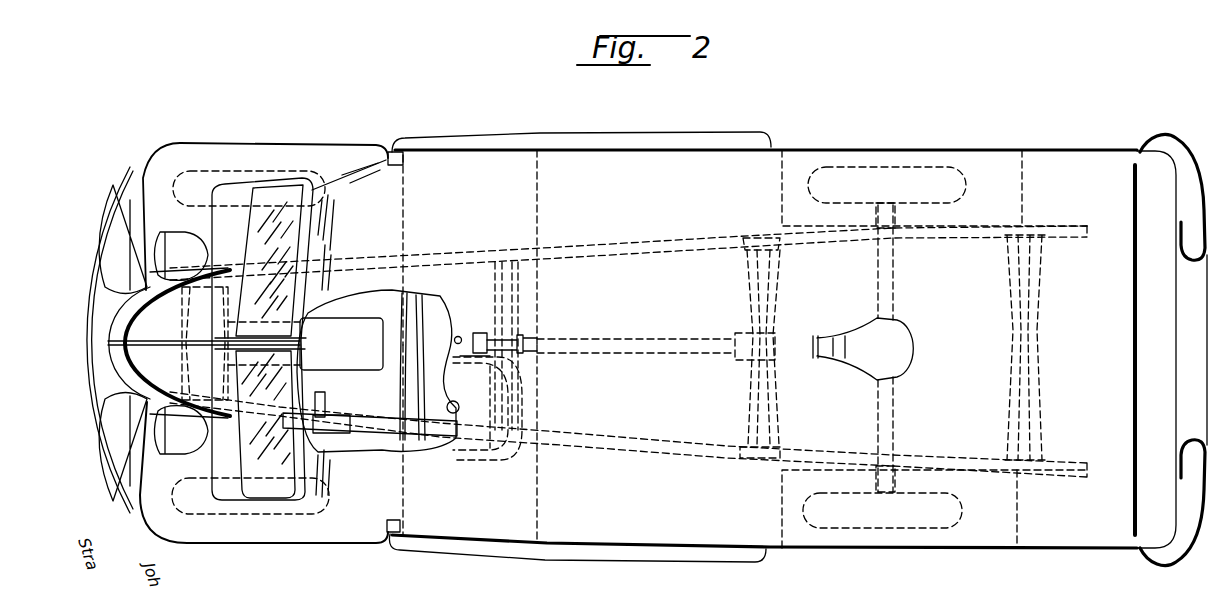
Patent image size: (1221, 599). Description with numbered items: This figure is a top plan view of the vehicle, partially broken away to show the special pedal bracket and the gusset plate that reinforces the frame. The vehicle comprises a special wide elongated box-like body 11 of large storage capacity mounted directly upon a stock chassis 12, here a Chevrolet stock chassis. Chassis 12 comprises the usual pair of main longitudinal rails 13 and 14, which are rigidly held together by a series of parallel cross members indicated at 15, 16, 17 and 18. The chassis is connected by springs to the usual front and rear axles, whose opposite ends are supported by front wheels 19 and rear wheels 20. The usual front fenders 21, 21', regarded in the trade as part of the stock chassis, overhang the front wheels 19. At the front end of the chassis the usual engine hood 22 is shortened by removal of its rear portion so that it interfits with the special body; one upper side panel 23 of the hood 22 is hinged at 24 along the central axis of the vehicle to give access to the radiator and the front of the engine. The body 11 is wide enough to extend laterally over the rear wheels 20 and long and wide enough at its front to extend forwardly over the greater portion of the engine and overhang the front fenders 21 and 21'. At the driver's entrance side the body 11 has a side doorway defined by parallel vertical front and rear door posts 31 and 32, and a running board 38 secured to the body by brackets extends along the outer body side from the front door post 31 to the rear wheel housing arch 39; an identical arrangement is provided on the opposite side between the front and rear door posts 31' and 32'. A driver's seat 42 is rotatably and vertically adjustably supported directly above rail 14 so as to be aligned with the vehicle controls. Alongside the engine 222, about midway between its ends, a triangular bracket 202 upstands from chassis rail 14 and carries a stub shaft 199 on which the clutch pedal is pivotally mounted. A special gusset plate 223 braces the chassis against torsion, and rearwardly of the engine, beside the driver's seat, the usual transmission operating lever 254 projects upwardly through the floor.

The box-like body 11 is at (727, 553).
The chassis 12 is at (626, 230).
The main longitudinal rail 13 is at (680, 250).
The main longitudinal rail 14 is at (586, 434).
The cross member 15 is at (411, 344).
The cross member 16 is at (520, 313).
The cross member 17 is at (772, 314).
The cross member 18 is at (1013, 281).
The front wheels 19 is at (196, 170).
The rear wheels 20 is at (921, 167).
The front fender 21 is at (264, 486).
The front fender 21' is at (265, 203).
The engine hood 22 is at (113, 324).
The upper side panel 23 is at (157, 367).
The hinge 24 is at (203, 341).
The front door post 31 is at (422, 440).
The front door post 31' is at (381, 232).
The rear door post 32 is at (558, 444).
The rear door post 32' is at (565, 246).
The running board 38 is at (676, 141).
The rear wheel housing arch 39 is at (1022, 162).
The driver's seat 42 is at (436, 457).
The stub shaft 199 is at (321, 404).
The triangular bracket 202 is at (336, 428).
The engine 222 is at (393, 316).
The gusset plate 223 is at (376, 416).
The transmission operating lever 254 is at (461, 336).